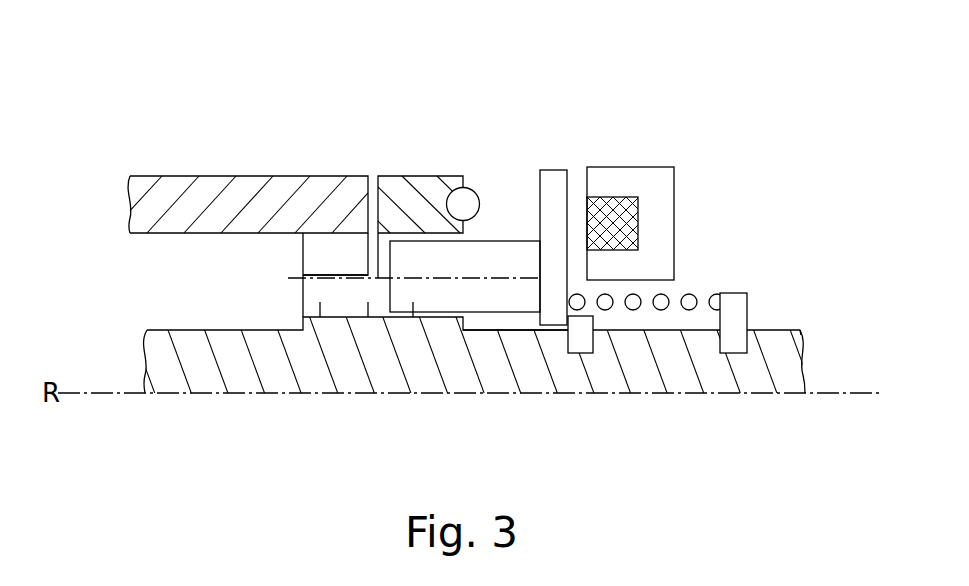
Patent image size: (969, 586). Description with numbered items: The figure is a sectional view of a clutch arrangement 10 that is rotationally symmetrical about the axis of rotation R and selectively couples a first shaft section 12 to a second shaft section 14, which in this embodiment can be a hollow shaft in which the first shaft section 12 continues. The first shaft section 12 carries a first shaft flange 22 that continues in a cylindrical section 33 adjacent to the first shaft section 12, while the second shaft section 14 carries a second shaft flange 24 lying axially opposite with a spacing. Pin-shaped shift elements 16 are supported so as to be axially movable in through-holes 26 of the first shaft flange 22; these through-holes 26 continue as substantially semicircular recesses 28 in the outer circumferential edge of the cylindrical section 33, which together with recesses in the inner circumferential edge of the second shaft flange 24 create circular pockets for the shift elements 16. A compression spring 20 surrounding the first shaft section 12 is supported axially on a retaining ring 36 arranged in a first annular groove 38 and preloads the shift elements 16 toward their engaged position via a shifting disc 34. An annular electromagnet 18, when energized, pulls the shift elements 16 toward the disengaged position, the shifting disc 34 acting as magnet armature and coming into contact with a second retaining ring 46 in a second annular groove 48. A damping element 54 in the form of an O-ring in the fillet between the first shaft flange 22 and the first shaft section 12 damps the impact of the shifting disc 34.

The clutch arrangement 10 is at (547, 80).
The first shaft section 12 is at (680, 373).
The second shaft section 14 is at (190, 197).
The shift elements 16 is at (507, 246).
The electromagnet 18 is at (655, 190).
The compression spring 20 is at (690, 296).
The first shaft flange 22 is at (407, 185).
The second shaft flange 24 is at (318, 246).
The through-holes 26 is at (413, 305).
The semicircular recesses 28 is at (320, 305).
The cylindrical section 33 is at (368, 305).
The shifting disc 34 is at (553, 190).
The retaining ring 36 is at (738, 295).
The first annular groove 38 is at (753, 395).
The second retaining ring 46 is at (580, 340).
The second annular groove 48 is at (566, 345).
The damping element 54 is at (462, 190).